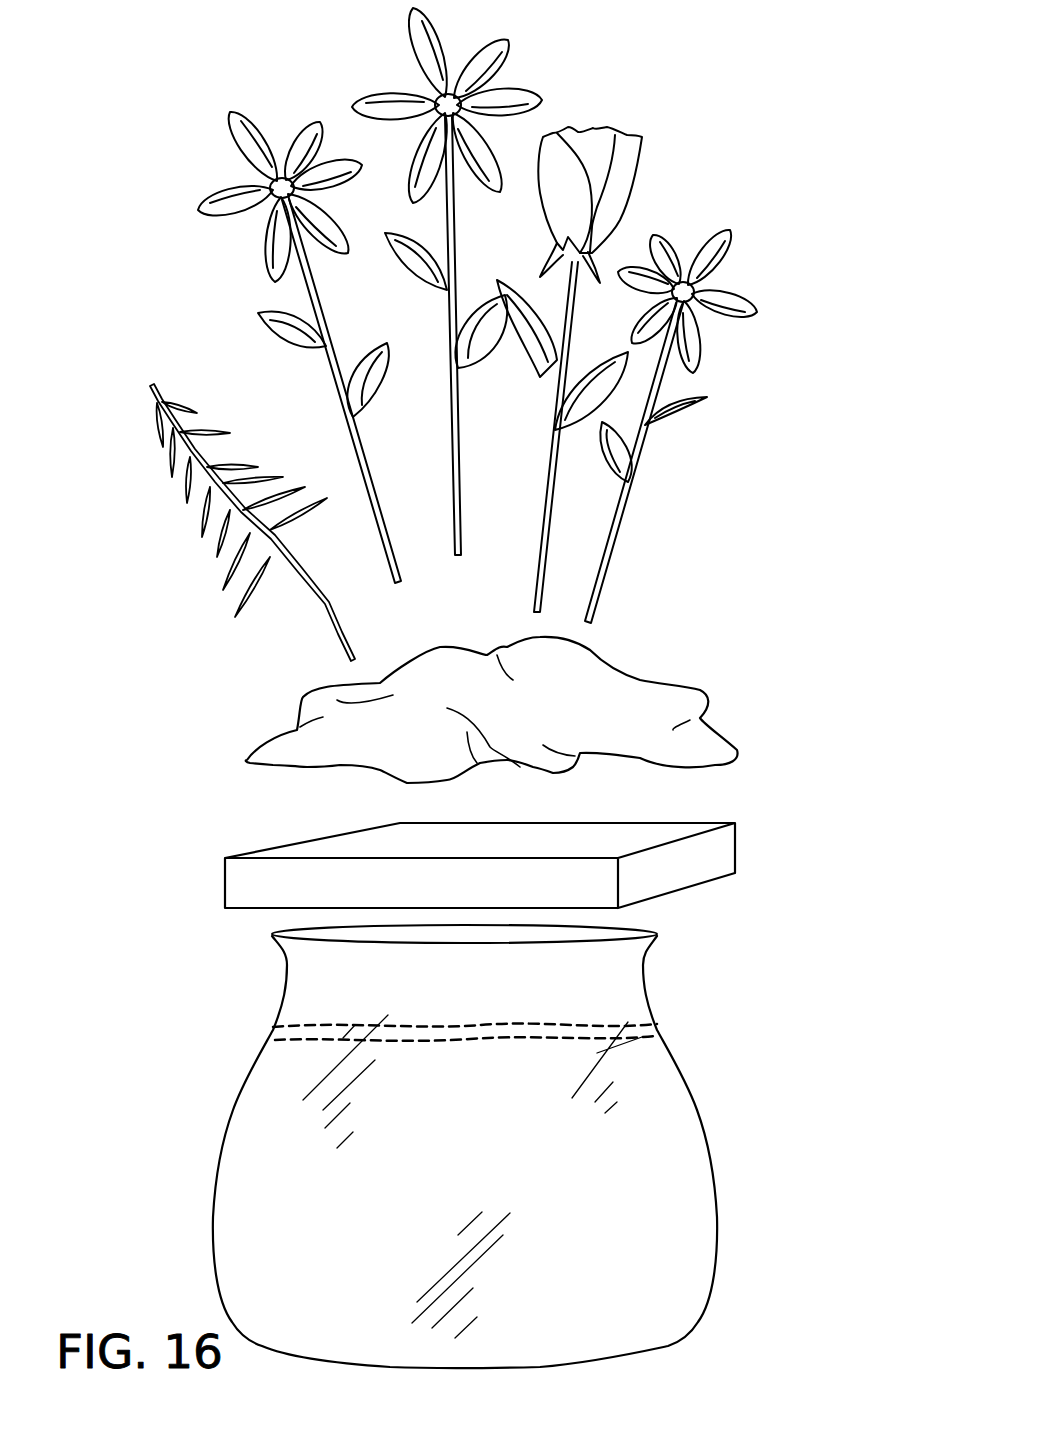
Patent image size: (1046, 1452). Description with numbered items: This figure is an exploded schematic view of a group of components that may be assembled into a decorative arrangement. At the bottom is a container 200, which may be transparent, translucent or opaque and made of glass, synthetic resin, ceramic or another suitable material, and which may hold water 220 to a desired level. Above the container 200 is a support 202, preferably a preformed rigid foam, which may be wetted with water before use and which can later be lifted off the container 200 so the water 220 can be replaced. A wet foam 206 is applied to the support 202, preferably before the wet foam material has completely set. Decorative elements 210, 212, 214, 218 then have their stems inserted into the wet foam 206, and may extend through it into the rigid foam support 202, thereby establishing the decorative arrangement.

The container 200 is at (687, 1085).
The support 202 is at (284, 844).
The wet foam 206 is at (650, 678).
The decorative element 210 is at (610, 563).
The decorative element 212 is at (537, 557).
The decorative element 214 is at (492, 177).
The decorative element 218 is at (313, 297).
The water 220 is at (320, 603).